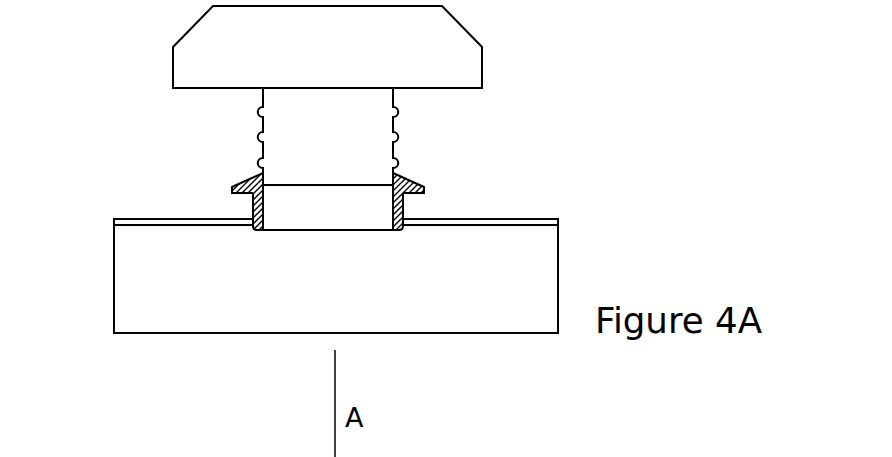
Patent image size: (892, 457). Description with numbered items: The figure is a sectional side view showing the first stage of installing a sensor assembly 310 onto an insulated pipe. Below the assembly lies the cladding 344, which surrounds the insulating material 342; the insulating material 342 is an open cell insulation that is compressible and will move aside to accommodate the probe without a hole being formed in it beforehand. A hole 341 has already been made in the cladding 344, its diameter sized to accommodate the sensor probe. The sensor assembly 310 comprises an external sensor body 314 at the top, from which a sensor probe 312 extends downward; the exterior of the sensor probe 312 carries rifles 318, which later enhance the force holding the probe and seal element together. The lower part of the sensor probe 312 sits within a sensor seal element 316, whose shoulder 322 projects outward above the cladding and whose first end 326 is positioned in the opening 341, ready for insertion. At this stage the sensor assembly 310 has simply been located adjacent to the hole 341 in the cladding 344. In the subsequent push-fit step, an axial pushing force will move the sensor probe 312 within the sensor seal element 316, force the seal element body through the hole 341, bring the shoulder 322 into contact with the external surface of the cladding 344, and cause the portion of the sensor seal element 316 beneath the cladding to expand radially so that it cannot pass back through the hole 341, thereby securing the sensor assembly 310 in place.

The sensor assembly 310 is at (149, 75).
The sensor probe 312 is at (262, 155).
The external sensor body 314 is at (448, 42).
The sensor seal element 316 is at (250, 202).
The rifles 318 is at (418, 142).
The shoulder 322 is at (232, 192).
The first end 326 is at (400, 233).
The hole 341 is at (403, 222).
The insulating material 342 is at (198, 323).
The cladding 344 is at (533, 222).